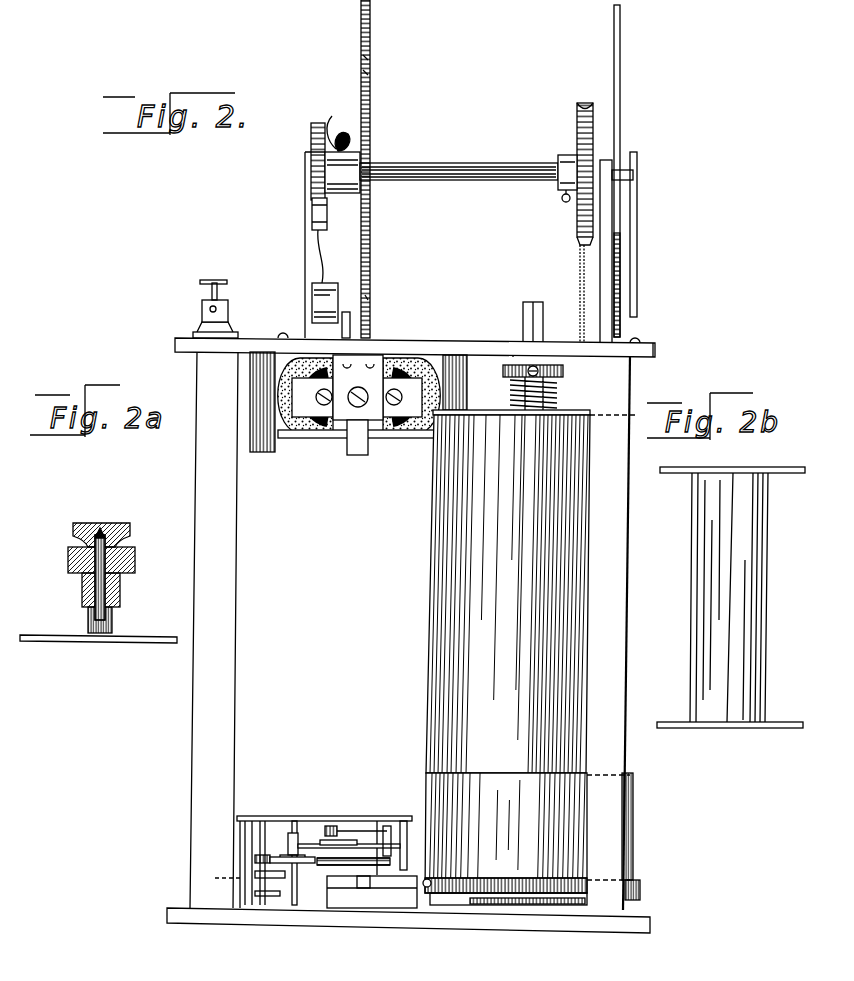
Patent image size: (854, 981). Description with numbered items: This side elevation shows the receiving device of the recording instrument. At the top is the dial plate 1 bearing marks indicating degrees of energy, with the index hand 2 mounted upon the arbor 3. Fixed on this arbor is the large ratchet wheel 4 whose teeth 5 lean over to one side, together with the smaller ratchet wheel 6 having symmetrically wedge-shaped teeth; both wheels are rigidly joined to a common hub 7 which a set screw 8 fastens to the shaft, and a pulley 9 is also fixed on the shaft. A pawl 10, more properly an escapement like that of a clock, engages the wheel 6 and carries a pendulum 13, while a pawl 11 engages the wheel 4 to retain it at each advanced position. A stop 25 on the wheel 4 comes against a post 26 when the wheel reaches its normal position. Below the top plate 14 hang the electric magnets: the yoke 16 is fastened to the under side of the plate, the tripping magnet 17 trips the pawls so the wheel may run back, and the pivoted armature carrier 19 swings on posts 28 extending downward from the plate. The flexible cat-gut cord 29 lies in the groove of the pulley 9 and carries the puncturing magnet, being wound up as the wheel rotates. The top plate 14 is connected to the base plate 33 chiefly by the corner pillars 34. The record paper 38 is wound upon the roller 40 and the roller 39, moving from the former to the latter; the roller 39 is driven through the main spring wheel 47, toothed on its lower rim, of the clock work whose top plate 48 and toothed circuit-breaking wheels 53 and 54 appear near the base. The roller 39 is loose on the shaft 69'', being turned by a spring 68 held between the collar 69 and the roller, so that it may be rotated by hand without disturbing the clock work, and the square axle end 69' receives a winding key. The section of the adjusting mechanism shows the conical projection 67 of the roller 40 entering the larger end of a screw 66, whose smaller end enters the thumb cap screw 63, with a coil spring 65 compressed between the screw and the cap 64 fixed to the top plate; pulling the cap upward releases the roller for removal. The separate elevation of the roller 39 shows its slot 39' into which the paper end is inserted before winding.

In FIG. 2, the dial plate 1 is at (620, 95).
In FIG. 2, the index hand 2 is at (637, 254).
In FIG. 2, the arbor 3 is at (468, 164).
In FIG. 2, the ratchet wheel 4 is at (375, 169).
In FIG. 2, the teeth 5 is at (369, 62).
In FIG. 2, the ratchet wheel 6 is at (311, 133).
In FIG. 2, the hub 7 is at (344, 134).
In FIG. 2, the set screw 8 is at (330, 119).
In FIG. 2, the pulley 9 is at (577, 143).
In FIG. 2, the pawl 10 is at (327, 214).
In FIG. 2, the pawl 11 is at (365, 340).
In FIG. 2, the pendulum 13 is at (334, 285).
In FIG. 2, the top plate 14 is at (660, 356).
In FIG. 2, the yoke 16 is at (398, 413).
In FIG. 2, the tripping magnet 17 is at (293, 439).
In FIG. 2, the armature carrier 19 is at (357, 456).
In FIG. 2, the stop 25 is at (369, 302).
In FIG. 2, the post 26 is at (352, 332).
In FIG. 2, the posts 28 is at (261, 455).
In FIG. 2, the flexible cord 29 is at (580, 278).
In FIG. 2, the base plate 33 is at (410, 921).
In FIG. 2, the corner pillars 34 is at (624, 634).
In FIG. 2, the paper 38 is at (583, 583).
In FIG. 2, the roller 39 is at (613, 432).
In FIG. 2B, the roller 39 is at (731, 582).
In FIG. 2B, the slot 39' is at (709, 597).
In FIG. 2A, the roller 40 is at (135, 643).
In FIG. 2, the main spring wheel 47 is at (634, 816).
In FIG. 2, the top plate of the clock work 48 is at (304, 816).
In FIG. 2, the wheel 53 is at (390, 830).
In FIG. 2, the wheel 54 is at (330, 870).
In FIG. 2A, the thumb cap screw 63 is at (131, 528).
In FIG. 2A, the cap 64 is at (135, 562).
In FIG. 2A, the coil spring 65 is at (121, 598).
In FIG. 2A, the screw 66 is at (103, 532).
In FIG. 2A, the conical projection 67 is at (88, 620).
In FIG. 2, the spring 68 is at (510, 392).
In FIG. 2, the collar 69 is at (542, 343).
In FIG. 2, the square axle end 69' is at (509, 313).
In FIG. 2, the shaft 69'' is at (492, 334).